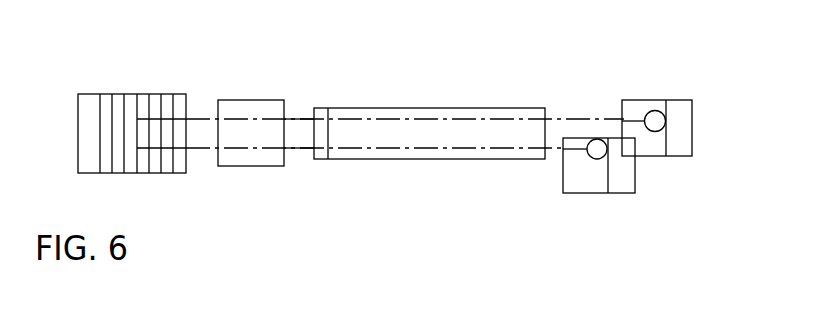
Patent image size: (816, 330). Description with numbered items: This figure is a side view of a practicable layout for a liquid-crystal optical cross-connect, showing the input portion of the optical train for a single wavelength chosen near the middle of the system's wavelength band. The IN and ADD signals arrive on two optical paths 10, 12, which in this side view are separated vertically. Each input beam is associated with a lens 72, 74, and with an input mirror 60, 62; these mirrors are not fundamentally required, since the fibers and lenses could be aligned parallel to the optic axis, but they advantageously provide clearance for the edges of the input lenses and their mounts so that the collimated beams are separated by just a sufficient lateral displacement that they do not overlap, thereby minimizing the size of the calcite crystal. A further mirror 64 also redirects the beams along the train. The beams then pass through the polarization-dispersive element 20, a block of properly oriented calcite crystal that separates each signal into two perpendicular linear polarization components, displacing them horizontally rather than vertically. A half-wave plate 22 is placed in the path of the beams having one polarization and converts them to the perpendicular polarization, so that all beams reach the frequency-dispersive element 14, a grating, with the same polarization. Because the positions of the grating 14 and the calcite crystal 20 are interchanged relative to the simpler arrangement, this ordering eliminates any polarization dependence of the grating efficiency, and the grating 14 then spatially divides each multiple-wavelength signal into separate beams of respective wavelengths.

The optical path 10 is at (575, 119).
The optical path 12 is at (561, 150).
The frequency-dispersive element 14 is at (132, 94).
The polarization-dispersive element 20 is at (410, 159).
The half-wave plate 22 is at (322, 159).
The mirror 60 is at (654, 155).
The mirror 62 is at (588, 194).
The mirror 64 is at (253, 101).
The lens 72 is at (655, 111).
The lens 74 is at (598, 139).